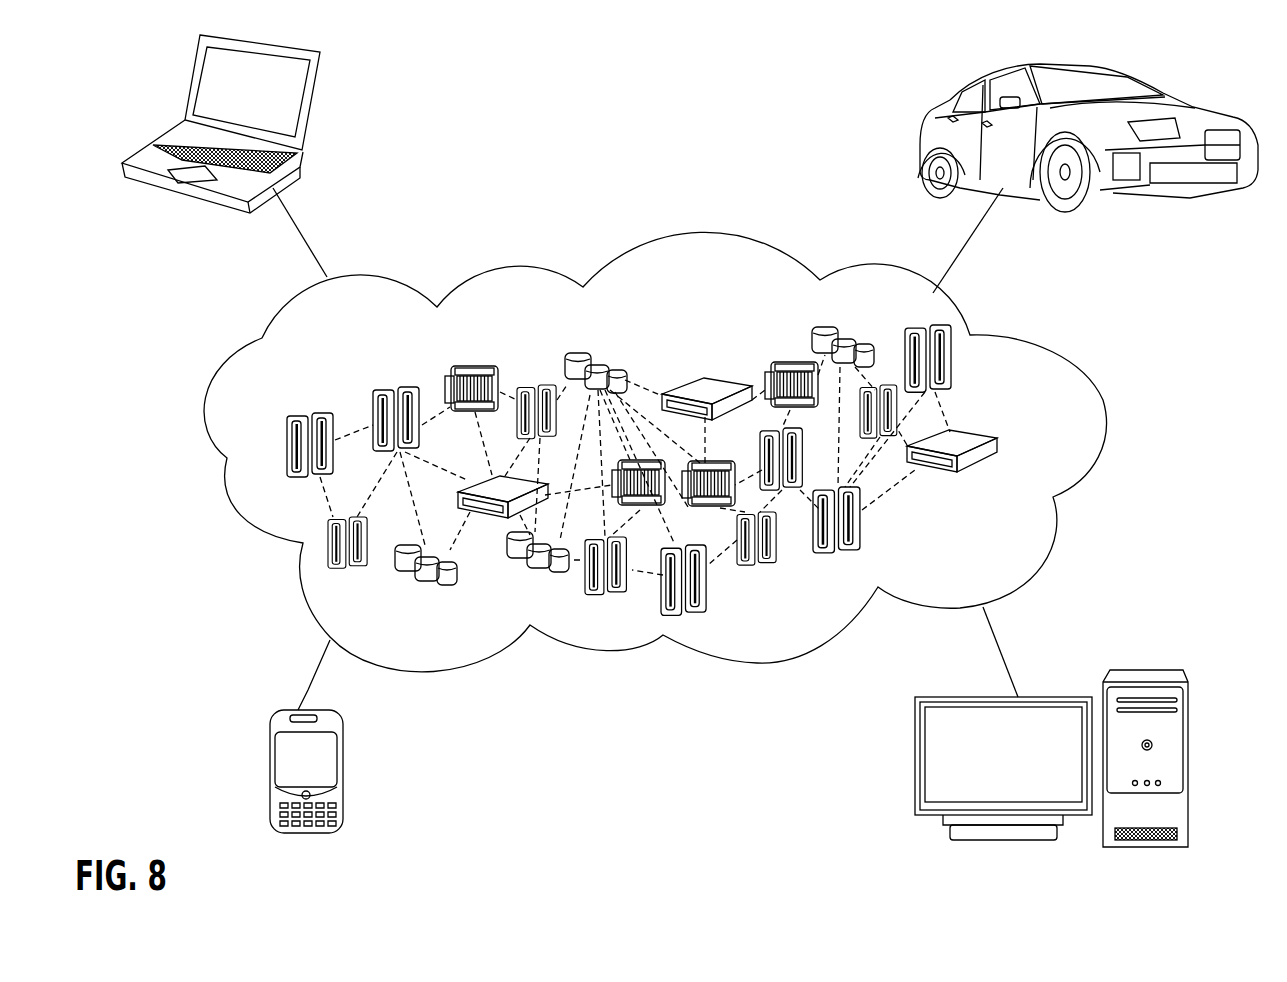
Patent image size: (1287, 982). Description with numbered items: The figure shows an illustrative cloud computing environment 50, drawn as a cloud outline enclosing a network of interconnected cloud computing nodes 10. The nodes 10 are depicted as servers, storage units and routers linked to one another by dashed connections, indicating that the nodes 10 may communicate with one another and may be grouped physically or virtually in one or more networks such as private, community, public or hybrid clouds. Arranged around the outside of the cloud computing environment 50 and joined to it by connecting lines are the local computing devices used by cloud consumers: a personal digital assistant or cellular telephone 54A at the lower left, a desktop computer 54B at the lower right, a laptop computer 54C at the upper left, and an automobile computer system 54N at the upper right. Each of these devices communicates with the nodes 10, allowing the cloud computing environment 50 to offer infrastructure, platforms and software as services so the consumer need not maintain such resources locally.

The cloud computing nodes 10 is at (1037, 445).
The cloud computing environment 50 is at (1063, 353).
The personal digital assistant (PDA) or cellular telephone 54A is at (270, 775).
The desktop computer 54B is at (1148, 670).
The laptop computer 54C is at (313, 108).
The automobile computer system 54N is at (930, 117).